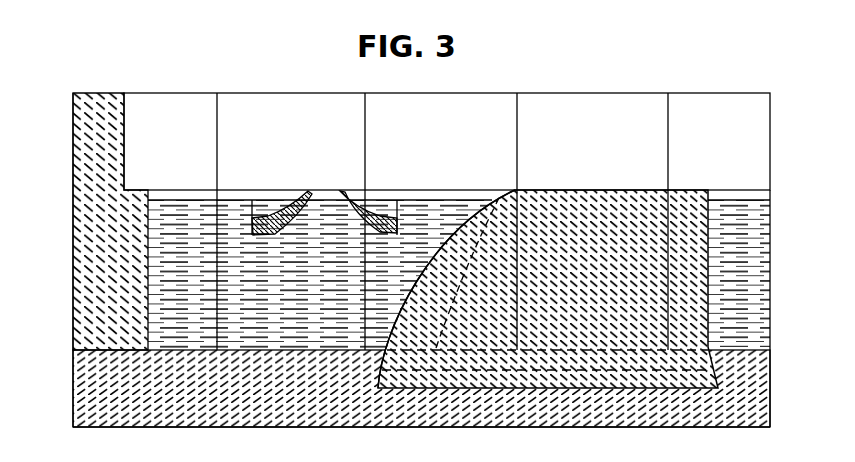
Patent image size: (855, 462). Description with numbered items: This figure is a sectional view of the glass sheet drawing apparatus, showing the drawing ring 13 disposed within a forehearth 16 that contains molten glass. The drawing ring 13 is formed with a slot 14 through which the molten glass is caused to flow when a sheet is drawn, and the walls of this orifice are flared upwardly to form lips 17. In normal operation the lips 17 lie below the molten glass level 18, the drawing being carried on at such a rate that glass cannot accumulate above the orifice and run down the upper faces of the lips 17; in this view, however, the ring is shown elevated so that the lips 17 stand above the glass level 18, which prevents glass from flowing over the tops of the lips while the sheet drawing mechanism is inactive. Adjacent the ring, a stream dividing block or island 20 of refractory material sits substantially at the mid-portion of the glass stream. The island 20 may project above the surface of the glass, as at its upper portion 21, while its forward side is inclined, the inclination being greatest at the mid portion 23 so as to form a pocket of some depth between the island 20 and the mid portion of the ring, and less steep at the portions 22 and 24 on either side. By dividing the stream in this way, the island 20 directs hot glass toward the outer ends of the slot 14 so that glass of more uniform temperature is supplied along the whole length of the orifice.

The drawing ring 13 is at (268, 212).
The slot 14 is at (328, 187).
The forehearth 16 is at (86, 228).
The lips 17 is at (307, 194).
The molten glass level 18 is at (175, 200).
The stream dividing block or island 20 is at (708, 192).
The projecting portion of island 21 is at (630, 191).
The inclined portion of island 22 is at (470, 197).
The mid portion of island forward side 23 is at (537, 192).
The inclined portion of island 24 is at (475, 248).